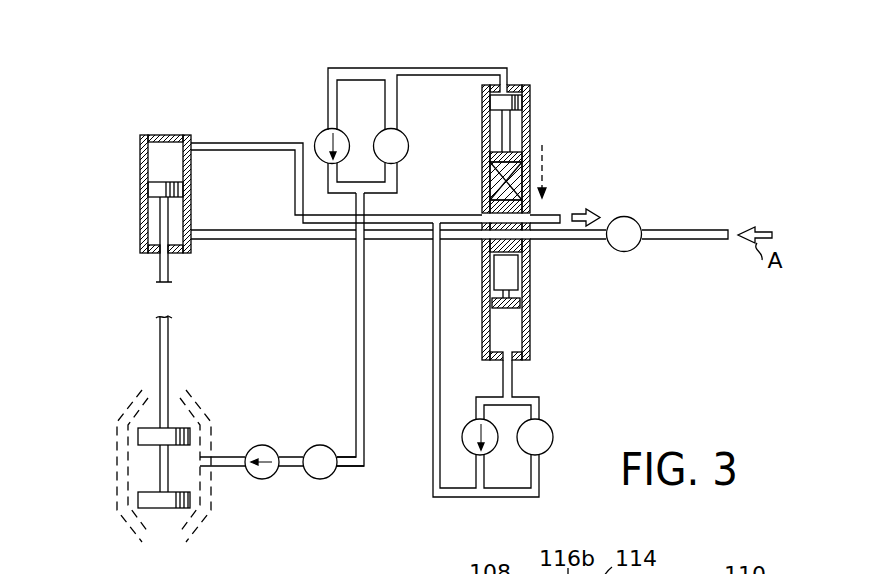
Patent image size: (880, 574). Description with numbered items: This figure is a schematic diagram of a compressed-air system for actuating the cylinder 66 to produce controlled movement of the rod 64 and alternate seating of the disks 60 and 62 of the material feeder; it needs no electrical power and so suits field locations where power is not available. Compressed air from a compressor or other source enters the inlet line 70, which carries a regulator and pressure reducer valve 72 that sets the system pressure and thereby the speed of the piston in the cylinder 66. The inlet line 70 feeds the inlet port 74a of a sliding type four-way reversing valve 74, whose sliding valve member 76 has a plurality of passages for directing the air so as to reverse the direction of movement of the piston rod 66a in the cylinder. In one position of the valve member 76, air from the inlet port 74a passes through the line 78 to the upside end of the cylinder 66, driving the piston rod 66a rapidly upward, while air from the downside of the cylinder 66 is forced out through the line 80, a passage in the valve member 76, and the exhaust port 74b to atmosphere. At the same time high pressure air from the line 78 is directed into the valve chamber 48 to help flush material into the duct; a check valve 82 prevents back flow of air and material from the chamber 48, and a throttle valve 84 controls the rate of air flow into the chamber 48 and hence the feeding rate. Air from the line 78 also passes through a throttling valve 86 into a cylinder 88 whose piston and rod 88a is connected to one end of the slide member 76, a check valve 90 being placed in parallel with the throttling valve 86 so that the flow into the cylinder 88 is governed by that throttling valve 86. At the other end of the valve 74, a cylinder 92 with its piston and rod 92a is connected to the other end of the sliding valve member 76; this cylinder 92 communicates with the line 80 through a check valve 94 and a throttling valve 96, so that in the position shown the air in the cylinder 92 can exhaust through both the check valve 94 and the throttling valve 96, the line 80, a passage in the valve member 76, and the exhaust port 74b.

The valve chamber 48 is at (131, 480).
The disk 60 is at (140, 430).
The disk 62 is at (165, 510).
The rod 64 is at (160, 462).
The cylinder 66 is at (142, 193).
The piston rod 66a is at (160, 272).
The inlet line 70 is at (718, 232).
The regulator and pressure reducer valve 72 is at (638, 219).
The sliding type 4-way reversing valve 74 is at (558, 222).
The inlet port 74a is at (530, 238).
The exhaust port 74b is at (530, 215).
The sliding valve member 76 is at (528, 208).
The line 78 is at (384, 242).
The line 80 is at (235, 144).
The check valve 82 is at (258, 445).
The throttle valve 84 is at (302, 445).
The throttling valve 86 is at (403, 134).
The cylinder 88 is at (569, 108).
The piston and rod 88a is at (512, 108).
The check valve 90 is at (326, 130).
The cylinder 92 is at (555, 358).
The piston and rod 92a is at (525, 305).
The check valve 94 is at (470, 422).
The throttling valve 96 is at (553, 437).